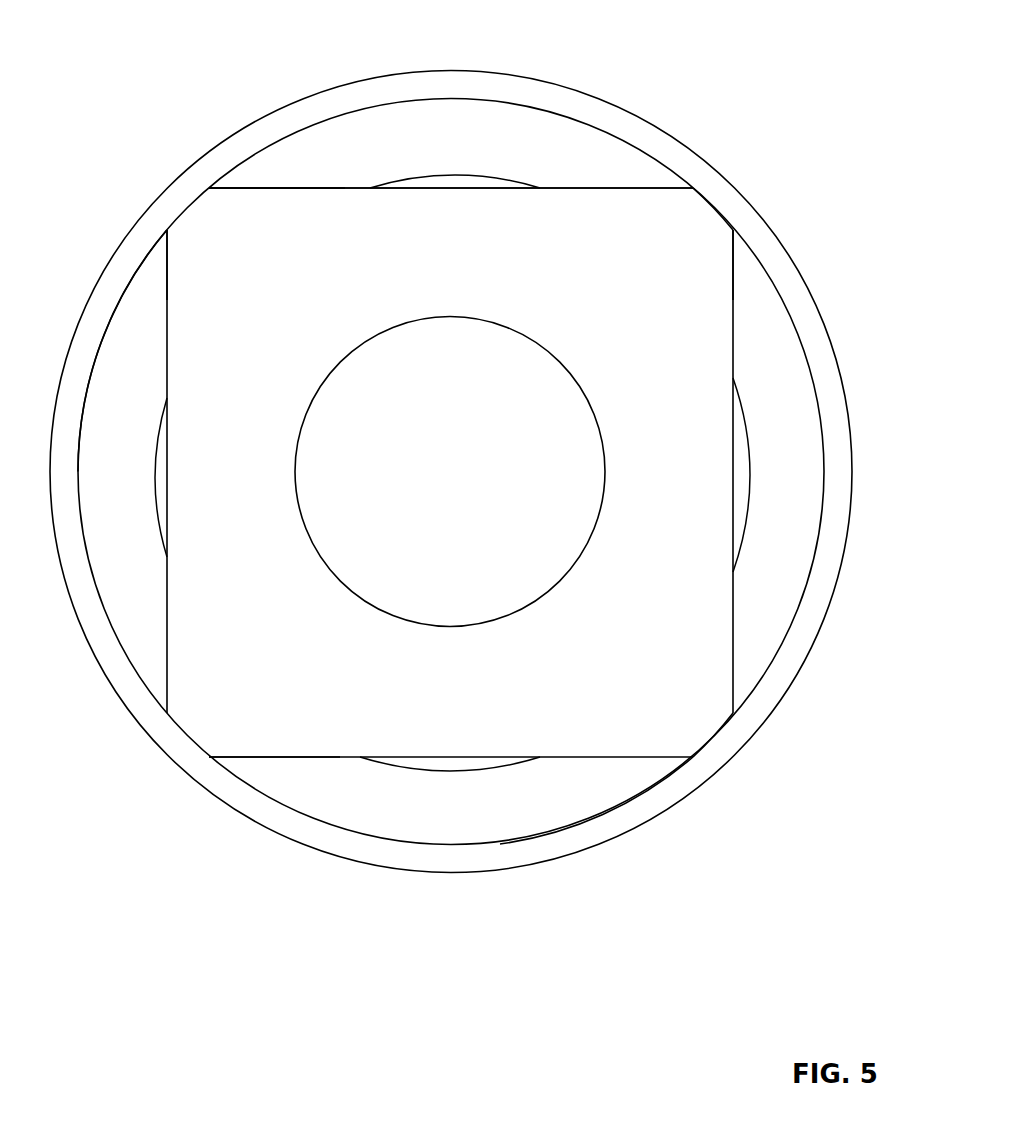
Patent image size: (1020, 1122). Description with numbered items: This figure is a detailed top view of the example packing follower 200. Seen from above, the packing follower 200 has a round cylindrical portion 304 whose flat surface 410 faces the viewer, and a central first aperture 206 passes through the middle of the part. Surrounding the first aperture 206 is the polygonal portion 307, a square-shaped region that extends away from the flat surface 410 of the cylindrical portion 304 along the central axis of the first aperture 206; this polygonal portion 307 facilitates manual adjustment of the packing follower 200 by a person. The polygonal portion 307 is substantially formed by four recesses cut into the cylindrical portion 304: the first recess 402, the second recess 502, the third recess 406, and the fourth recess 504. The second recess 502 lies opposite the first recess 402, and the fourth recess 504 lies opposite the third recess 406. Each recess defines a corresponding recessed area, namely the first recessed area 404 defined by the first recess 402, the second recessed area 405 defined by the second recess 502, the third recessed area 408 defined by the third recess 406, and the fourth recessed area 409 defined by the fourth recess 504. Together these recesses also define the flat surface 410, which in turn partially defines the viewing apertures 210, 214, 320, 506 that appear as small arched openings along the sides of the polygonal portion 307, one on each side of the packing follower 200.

The packing follower 200 is at (713, 207).
The first aperture 206 is at (536, 389).
The viewing aperture 210 is at (741, 445).
The viewing aperture 214 is at (447, 775).
The cylindrical portion 304 is at (257, 822).
The polygonal portion 307 is at (619, 293).
The viewing aperture 320 is at (158, 514).
The first recess 402 is at (770, 614).
The first recessed area 404 is at (733, 281).
The second recessed area 405 is at (167, 295).
The third recess 406 is at (590, 792).
The third recessed area 408 is at (297, 757).
The fourth recessed area 409 is at (317, 188).
The flat surface 410 is at (553, 173).
The second recess 502 is at (132, 381).
The fourth recess 504 is at (250, 173).
The viewing aperture 506 is at (483, 173).